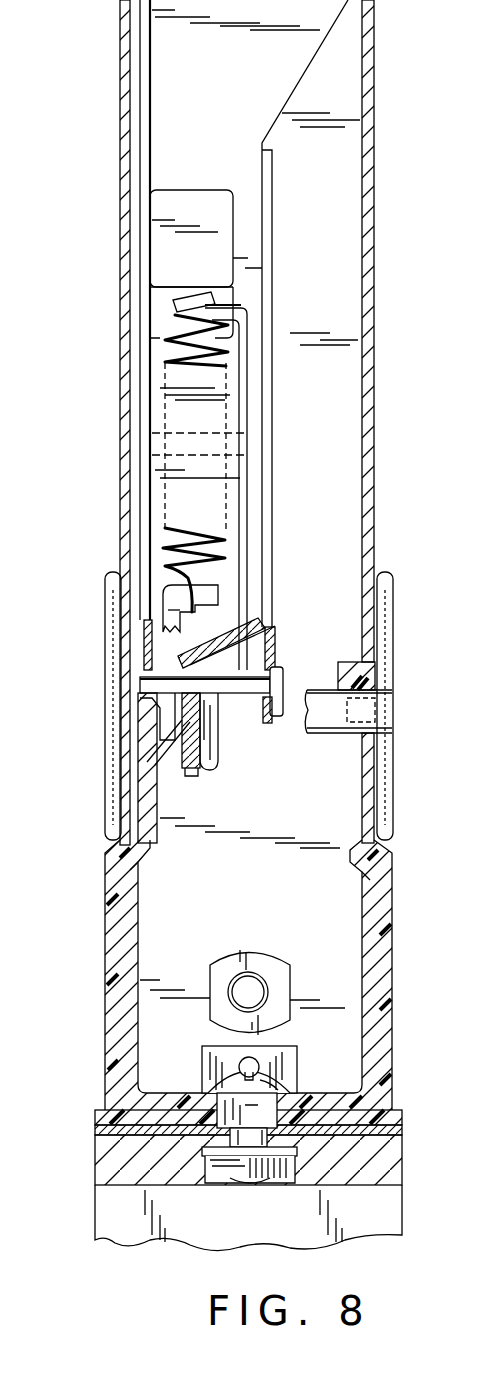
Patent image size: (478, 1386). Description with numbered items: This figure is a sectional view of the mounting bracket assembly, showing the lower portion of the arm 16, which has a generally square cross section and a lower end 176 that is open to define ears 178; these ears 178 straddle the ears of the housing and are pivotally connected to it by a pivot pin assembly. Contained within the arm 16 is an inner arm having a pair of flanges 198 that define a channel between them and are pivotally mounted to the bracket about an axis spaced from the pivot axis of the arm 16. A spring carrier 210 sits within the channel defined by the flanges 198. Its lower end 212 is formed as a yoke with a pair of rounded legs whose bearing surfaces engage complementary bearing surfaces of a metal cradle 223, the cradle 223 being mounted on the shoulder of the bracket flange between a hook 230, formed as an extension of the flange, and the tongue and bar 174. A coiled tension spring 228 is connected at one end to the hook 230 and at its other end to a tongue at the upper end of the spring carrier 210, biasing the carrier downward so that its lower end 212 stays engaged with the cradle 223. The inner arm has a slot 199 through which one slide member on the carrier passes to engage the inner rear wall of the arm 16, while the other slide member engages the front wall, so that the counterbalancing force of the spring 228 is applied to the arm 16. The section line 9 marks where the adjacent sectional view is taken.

The section line 9- 9 is at (135, 23).
The arm 16 is at (125, 373).
The lower end 176 is at (125, 512).
The flanges 198 is at (146, 146).
The slot 199 is at (192, 190).
The spring carrier 210 is at (257, 407).
The coiled tension spring 228 is at (227, 540).
The hook 230 is at (193, 613).
The lower end 212 is at (277, 623).
The bar 174 is at (212, 723).
The metal cradle 223 is at (197, 773).
The ears 178 is at (128, 783).